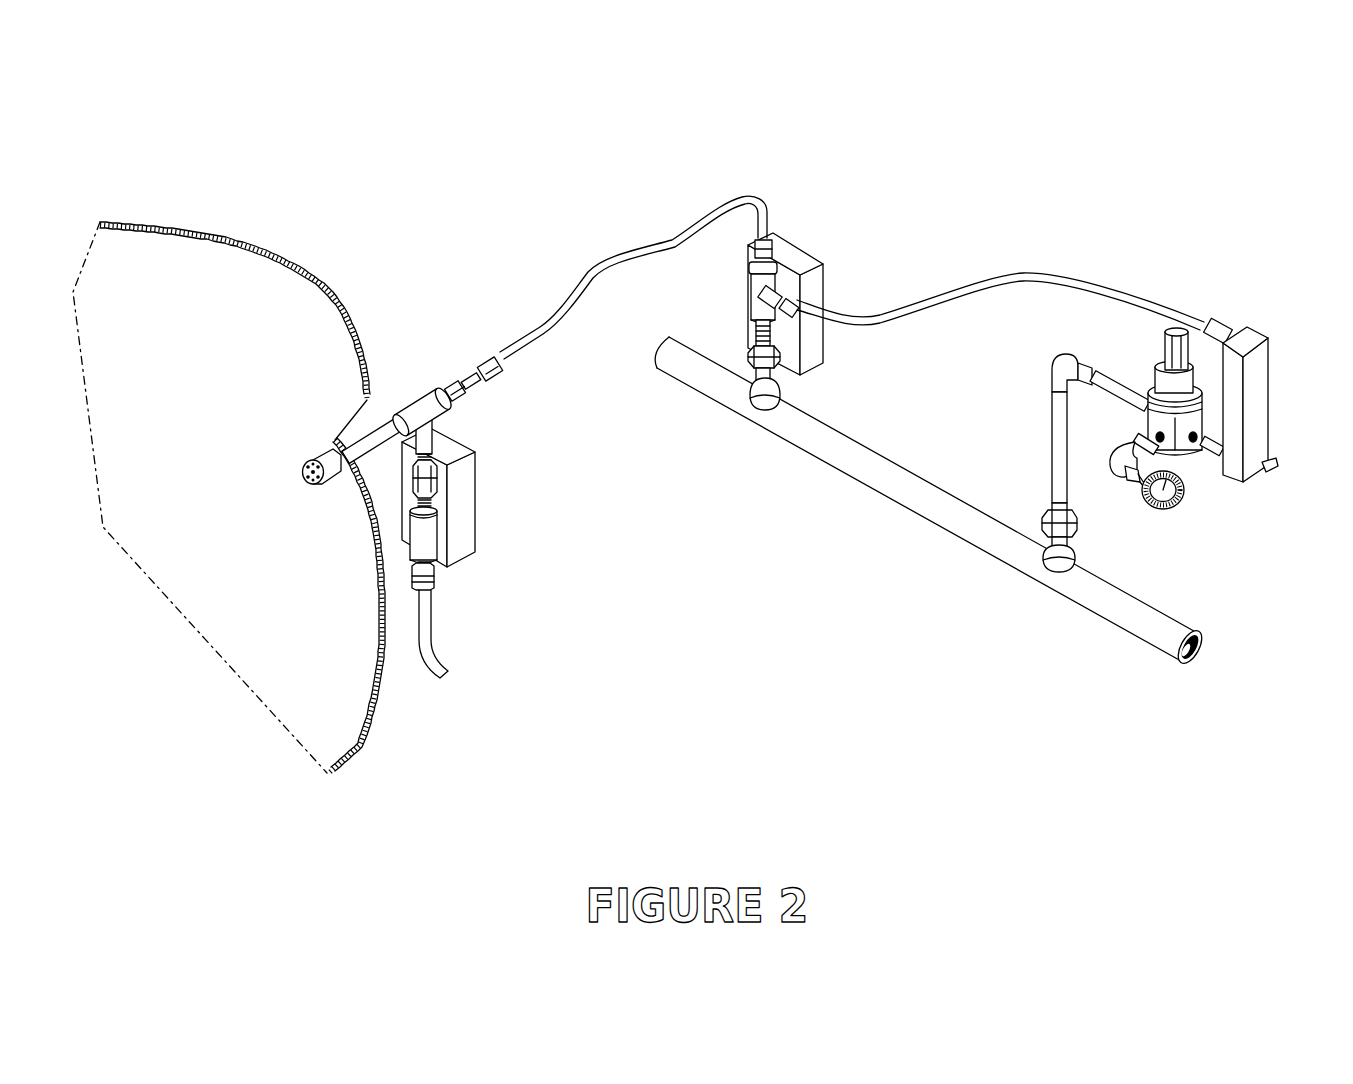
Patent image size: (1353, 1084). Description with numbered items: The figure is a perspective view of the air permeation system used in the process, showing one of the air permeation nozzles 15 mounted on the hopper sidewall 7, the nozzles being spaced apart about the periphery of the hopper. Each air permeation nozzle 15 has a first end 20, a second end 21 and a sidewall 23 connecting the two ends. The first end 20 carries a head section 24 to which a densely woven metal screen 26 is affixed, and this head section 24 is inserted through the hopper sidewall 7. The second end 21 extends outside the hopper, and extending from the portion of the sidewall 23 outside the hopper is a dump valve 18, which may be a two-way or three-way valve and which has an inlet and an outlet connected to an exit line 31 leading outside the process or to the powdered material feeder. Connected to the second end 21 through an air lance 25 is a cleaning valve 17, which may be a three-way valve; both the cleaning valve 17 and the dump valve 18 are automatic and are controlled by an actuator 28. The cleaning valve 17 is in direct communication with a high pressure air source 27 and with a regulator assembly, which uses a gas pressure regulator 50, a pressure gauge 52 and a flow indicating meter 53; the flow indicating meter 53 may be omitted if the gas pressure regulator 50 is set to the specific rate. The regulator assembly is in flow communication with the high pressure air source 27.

The hopper sidewall 7 is at (248, 248).
The air permeation nozzle 15 is at (419, 352).
The cleaning valve 17 is at (743, 293).
The dump valve 18 is at (407, 542).
The first end 20 is at (330, 447).
The second end 21 is at (433, 382).
The sidewall 23 is at (370, 432).
The head section 24 is at (328, 480).
The air lance 25 is at (482, 380).
The densely woven metal screen 26 is at (304, 470).
The high pressure air source 27 is at (893, 502).
The actuator 28 is at (477, 502).
The exit line 31 is at (430, 637).
The gas pressure regulator 50 is at (1183, 330).
The pressure gauge 52 is at (1193, 513).
The flow indicating meter 53 is at (1267, 337).